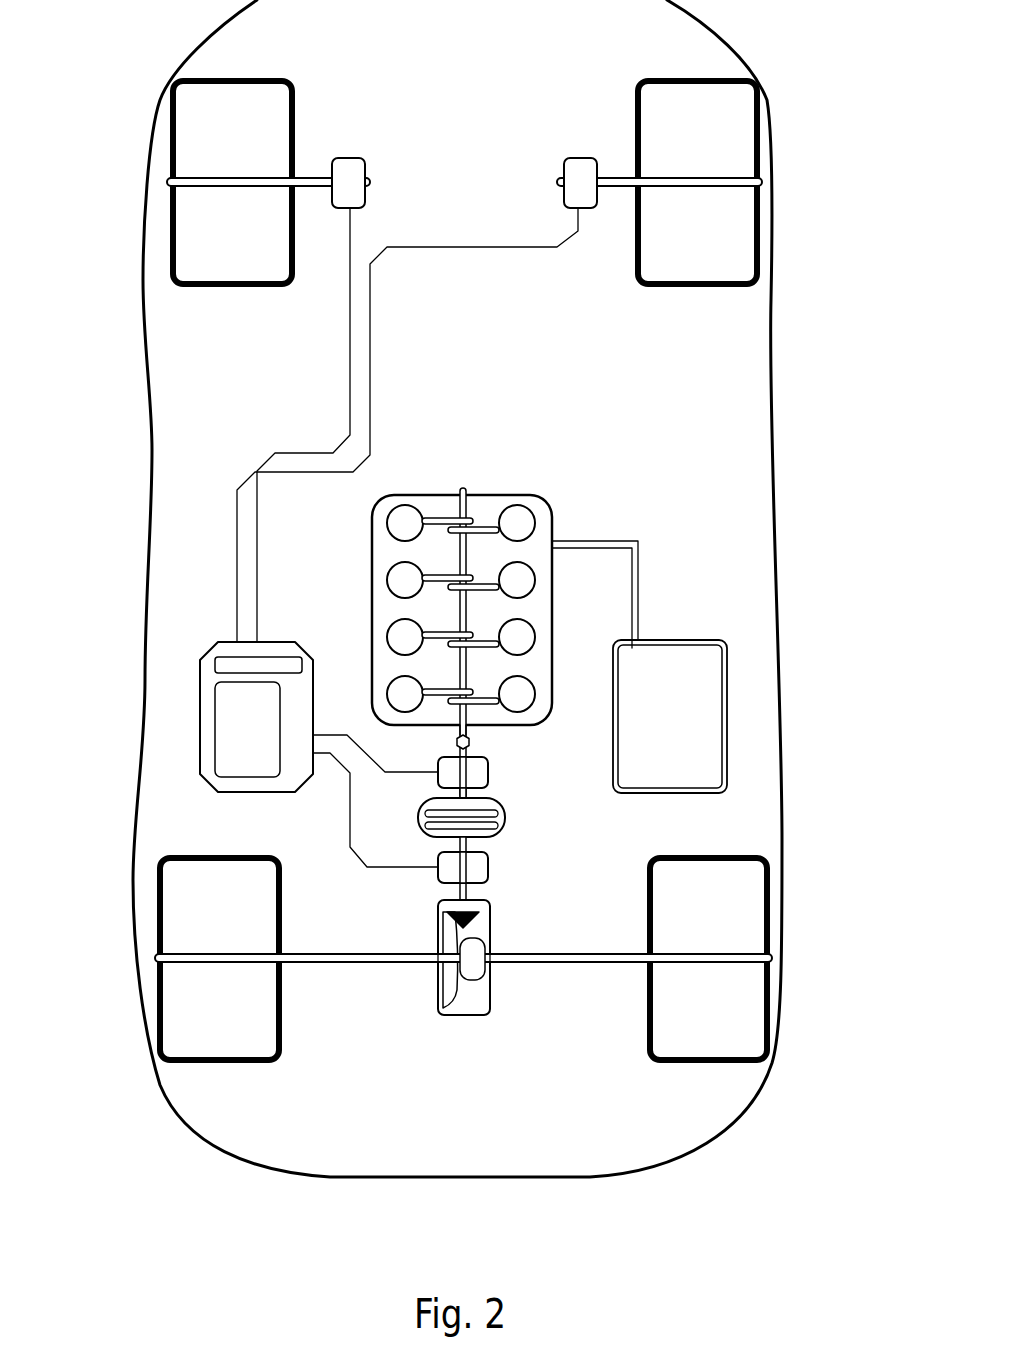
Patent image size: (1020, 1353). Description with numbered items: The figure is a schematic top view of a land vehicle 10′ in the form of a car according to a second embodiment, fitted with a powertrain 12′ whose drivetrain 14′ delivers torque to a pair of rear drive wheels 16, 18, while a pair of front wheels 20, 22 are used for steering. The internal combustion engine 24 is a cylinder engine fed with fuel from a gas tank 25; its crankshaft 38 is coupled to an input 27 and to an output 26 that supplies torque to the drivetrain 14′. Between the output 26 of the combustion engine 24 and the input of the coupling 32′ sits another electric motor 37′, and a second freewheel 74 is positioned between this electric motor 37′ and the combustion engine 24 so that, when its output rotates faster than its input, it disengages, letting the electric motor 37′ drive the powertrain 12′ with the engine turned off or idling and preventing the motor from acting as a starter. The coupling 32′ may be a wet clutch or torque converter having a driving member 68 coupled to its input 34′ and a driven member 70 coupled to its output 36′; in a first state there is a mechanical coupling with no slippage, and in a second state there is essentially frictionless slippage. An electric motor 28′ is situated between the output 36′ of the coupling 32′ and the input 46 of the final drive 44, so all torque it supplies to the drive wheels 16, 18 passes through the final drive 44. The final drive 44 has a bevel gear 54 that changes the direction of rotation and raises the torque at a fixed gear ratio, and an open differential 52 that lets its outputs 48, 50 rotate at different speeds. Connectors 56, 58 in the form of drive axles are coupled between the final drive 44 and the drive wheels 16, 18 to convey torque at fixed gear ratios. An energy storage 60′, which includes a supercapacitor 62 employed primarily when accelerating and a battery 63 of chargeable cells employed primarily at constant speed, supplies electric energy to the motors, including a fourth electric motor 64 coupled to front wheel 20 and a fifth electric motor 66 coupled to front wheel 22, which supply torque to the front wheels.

The land vehicle 10′ is at (808, 512).
The powertrain 12′ is at (518, 418).
The drivetrain 14′ is at (502, 1092).
The rear drive wheel 16 is at (157, 988).
The rear drive wheel 18 is at (772, 990).
The front wheel 20 is at (167, 148).
The front wheel 22 is at (762, 148).
The internal combustion engine 24 is at (473, 599).
The gas tank 25 is at (727, 707).
The output 26 is at (470, 738).
The input 27 is at (462, 490).
The electric motor 28′ is at (488, 866).
The coupling 32′ is at (471, 815).
The input 34′ is at (456, 802).
The output 36′ is at (456, 838).
The electric motor 37′ is at (488, 772).
The crankshaft 38 is at (460, 614).
The final drive 44 is at (463, 992).
The input 46 is at (468, 897).
The output 48 is at (438, 963).
The output 50 is at (490, 963).
The open differential 52 is at (472, 940).
The bevel gear 54 is at (458, 906).
The connector 56 is at (343, 962).
The connector 58 is at (585, 962).
The energy storage 60′ is at (179, 717).
The supercapacitor 62 is at (215, 755).
The battery 63 is at (215, 665).
The fourth electric motor 64 is at (350, 158).
The fifth electric motor 66 is at (578, 158).
The driving member 68 is at (425, 813).
The driven member 70 is at (425, 826).
The second freewheel 74 is at (455, 742).